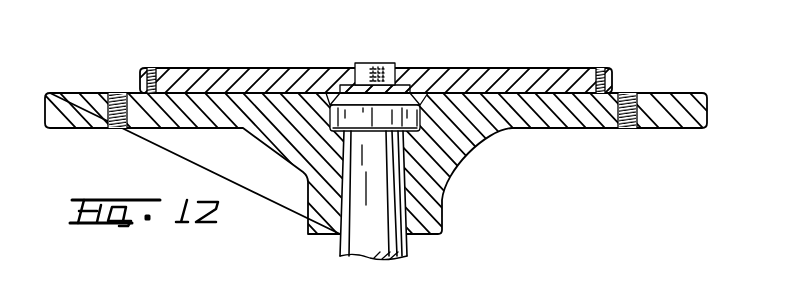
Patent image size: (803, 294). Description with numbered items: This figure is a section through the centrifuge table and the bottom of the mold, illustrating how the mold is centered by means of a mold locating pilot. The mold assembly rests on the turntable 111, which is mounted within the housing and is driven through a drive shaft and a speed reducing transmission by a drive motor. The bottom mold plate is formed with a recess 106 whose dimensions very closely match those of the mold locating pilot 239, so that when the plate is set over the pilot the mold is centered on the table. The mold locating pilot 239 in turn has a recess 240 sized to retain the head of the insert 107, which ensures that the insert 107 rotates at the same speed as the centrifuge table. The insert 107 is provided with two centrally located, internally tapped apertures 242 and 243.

The recess 106 is at (353, 63).
The insert 107 is at (389, 61).
The turntable 111 is at (471, 152).
The mold locating pilot 239 is at (336, 112).
The recess 240 is at (410, 68).
The internally tapped aperture 242 is at (378, 62).
The internally tapped aperture 243 is at (398, 80).